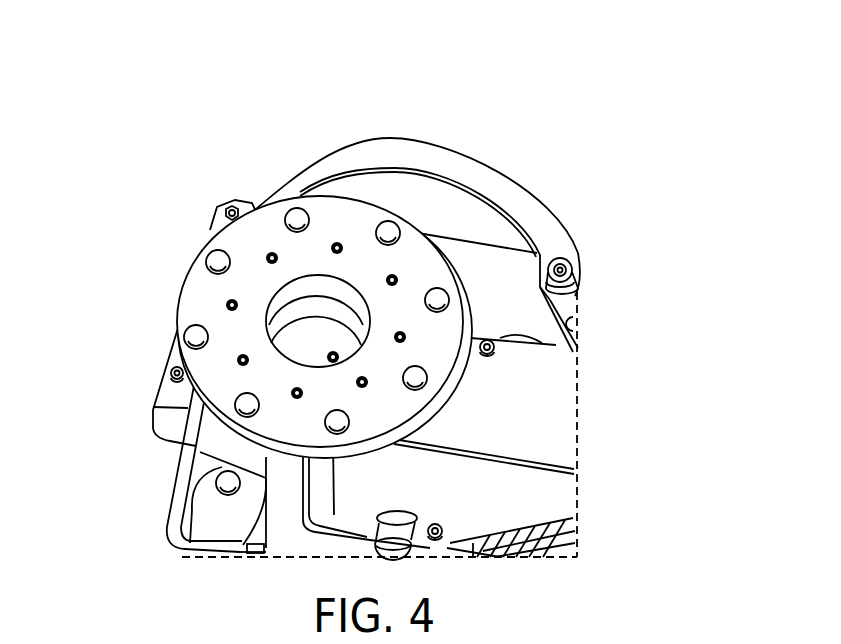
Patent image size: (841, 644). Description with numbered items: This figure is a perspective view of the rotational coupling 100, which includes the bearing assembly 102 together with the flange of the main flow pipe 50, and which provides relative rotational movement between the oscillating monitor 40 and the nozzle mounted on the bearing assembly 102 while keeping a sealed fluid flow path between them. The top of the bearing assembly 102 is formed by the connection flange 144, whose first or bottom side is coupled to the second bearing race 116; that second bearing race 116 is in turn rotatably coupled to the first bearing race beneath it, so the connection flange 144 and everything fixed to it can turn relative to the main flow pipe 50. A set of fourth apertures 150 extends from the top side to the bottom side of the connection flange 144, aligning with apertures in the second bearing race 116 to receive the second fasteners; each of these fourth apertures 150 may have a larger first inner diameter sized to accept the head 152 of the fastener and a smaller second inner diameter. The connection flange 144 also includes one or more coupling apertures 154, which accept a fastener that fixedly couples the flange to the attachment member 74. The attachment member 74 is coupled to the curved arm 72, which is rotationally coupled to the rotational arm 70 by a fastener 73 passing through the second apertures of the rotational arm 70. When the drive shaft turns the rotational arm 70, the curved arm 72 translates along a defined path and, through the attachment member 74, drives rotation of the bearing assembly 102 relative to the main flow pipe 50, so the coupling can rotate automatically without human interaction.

The rotational coupling 100 is at (374, 322).
The oscillating monitor 40 is at (587, 450).
The main flow pipe 50 is at (332, 340).
The rotational arm 70 is at (573, 327).
The curved arm 72 is at (507, 186).
The fastener 73 is at (577, 270).
The attachment member 74 is at (211, 228).
The bearing assembly 102 is at (176, 260).
The second bearing race 116 is at (318, 290).
The connection flange 144 is at (281, 271).
The fourth apertures 150 is at (272, 254).
The head 152 is at (243, 361).
The coupling apertures 154 is at (180, 323).